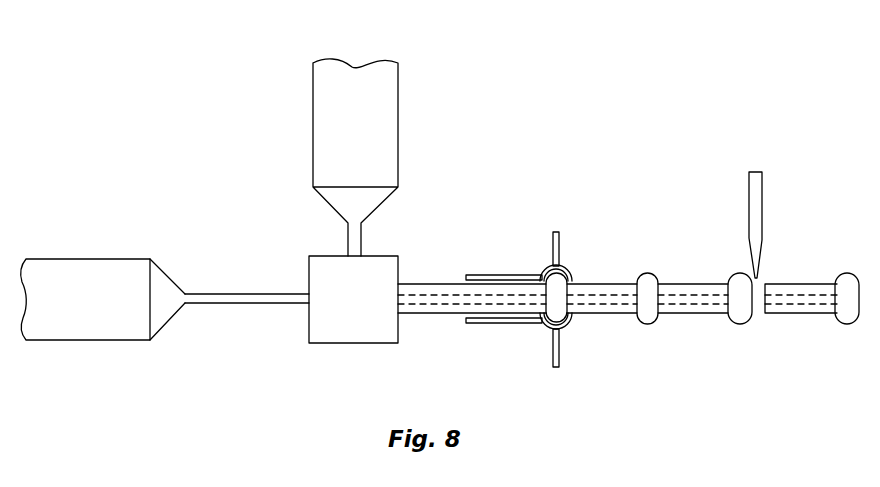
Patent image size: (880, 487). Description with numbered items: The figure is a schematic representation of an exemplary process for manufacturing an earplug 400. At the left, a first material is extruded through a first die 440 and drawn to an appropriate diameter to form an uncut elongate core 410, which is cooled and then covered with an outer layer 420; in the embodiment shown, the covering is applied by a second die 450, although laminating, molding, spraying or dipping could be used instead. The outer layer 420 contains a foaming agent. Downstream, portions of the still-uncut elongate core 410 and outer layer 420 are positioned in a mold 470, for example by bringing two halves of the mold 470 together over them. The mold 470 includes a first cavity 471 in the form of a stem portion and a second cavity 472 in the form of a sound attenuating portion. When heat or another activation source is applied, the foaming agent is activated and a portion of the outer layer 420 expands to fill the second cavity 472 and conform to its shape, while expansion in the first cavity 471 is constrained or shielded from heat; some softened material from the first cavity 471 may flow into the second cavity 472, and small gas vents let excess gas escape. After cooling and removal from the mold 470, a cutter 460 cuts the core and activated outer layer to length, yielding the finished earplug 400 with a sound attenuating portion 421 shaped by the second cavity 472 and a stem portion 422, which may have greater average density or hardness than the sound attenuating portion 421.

The earplug 400 is at (826, 258).
The elongate core 410 is at (230, 292).
The outer layer 420 is at (452, 282).
The sound attenuating portion 421 is at (845, 318).
The stem portion 422 is at (778, 307).
The first die 440 is at (90, 270).
The second die 450 is at (385, 262).
The cutter 460 is at (756, 180).
The mold 470 is at (559, 224).
The first cavity 471 is at (505, 324).
The second cavity 472 is at (565, 333).